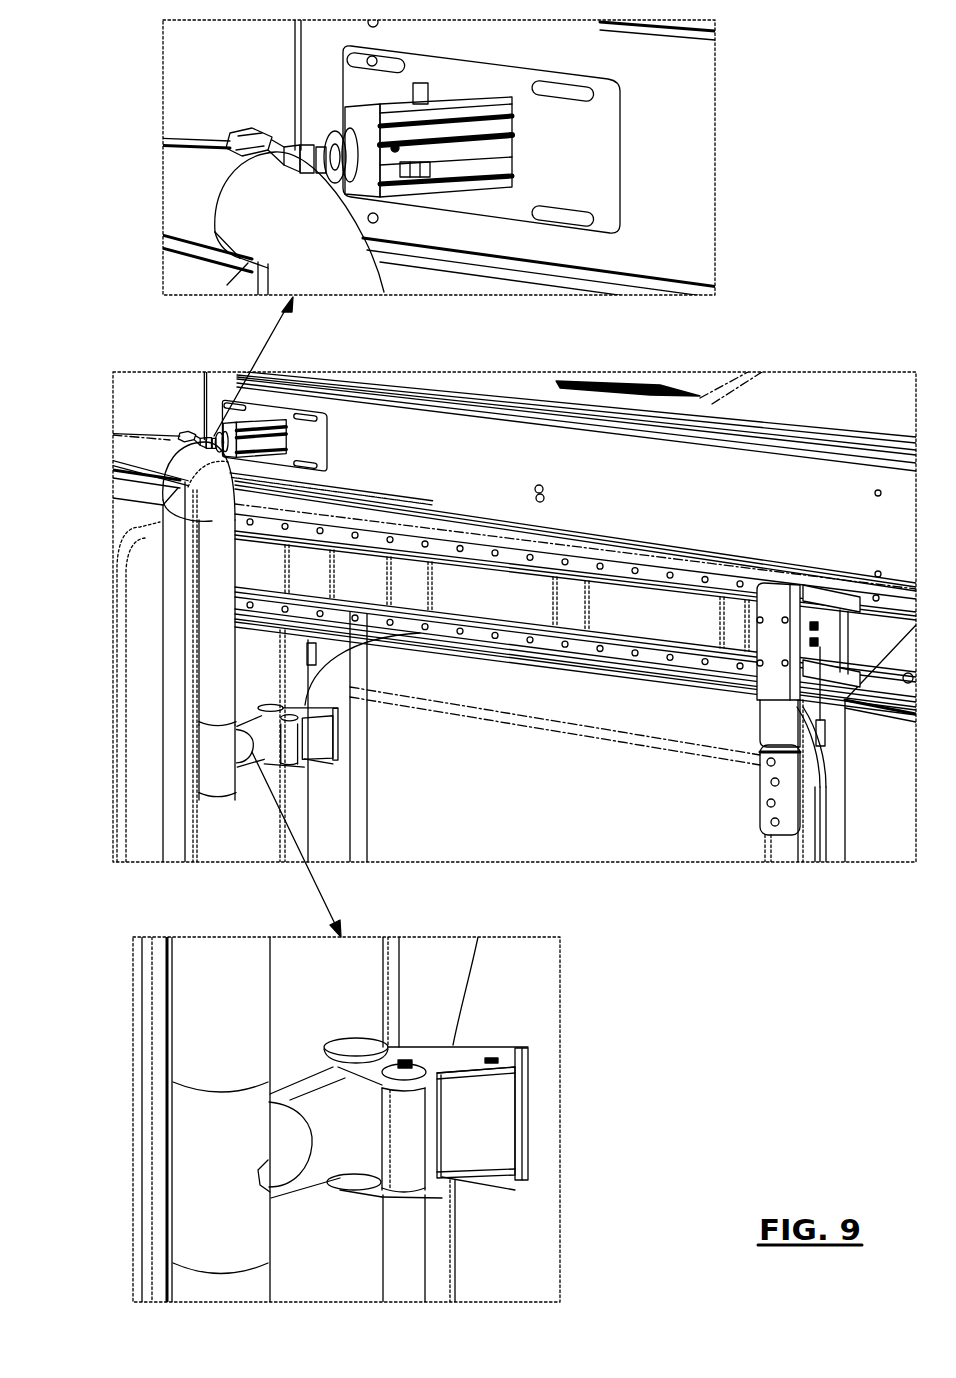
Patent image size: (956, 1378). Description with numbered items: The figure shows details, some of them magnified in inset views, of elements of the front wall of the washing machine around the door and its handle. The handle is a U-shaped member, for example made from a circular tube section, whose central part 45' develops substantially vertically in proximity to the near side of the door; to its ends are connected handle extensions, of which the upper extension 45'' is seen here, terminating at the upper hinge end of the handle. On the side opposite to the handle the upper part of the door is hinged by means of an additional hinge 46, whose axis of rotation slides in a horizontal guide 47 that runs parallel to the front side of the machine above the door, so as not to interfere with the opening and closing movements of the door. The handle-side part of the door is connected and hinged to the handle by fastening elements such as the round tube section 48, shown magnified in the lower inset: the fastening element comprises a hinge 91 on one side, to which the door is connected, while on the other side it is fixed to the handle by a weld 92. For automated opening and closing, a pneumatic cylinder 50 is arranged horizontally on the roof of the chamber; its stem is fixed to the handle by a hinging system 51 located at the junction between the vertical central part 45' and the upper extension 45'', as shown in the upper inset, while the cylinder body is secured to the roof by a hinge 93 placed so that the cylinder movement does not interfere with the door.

The central part of the handle 45' is at (206, 438).
The upper handle extension 45'' is at (472, 616).
The additional hinge 46 is at (767, 783).
The horizontal guide 47 is at (637, 615).
The round tube section fastening element 48 is at (293, 738).
The pneumatic cylinder 50 is at (437, 130).
The hinging system 51 is at (240, 148).
The hinge 91 is at (397, 1120).
The weld 92 is at (213, 1092).
The hinge 93 is at (593, 177).